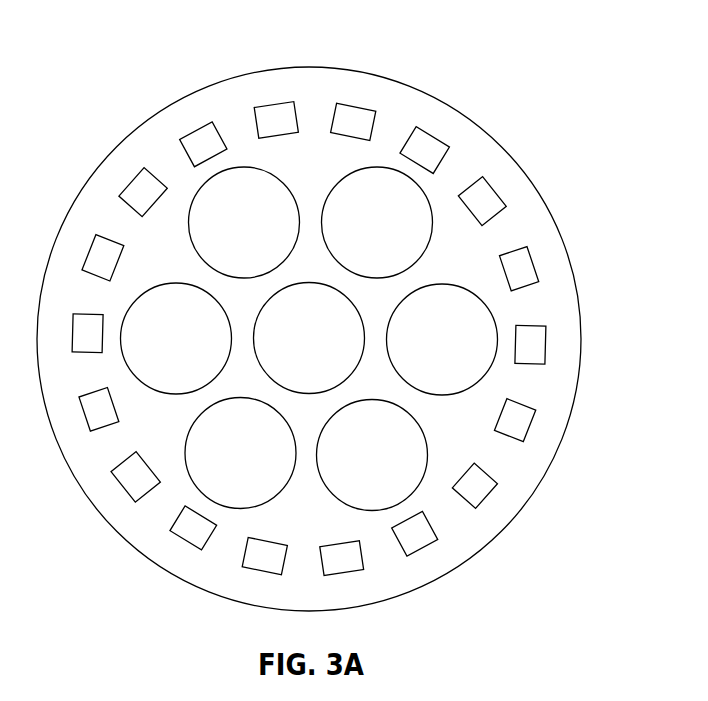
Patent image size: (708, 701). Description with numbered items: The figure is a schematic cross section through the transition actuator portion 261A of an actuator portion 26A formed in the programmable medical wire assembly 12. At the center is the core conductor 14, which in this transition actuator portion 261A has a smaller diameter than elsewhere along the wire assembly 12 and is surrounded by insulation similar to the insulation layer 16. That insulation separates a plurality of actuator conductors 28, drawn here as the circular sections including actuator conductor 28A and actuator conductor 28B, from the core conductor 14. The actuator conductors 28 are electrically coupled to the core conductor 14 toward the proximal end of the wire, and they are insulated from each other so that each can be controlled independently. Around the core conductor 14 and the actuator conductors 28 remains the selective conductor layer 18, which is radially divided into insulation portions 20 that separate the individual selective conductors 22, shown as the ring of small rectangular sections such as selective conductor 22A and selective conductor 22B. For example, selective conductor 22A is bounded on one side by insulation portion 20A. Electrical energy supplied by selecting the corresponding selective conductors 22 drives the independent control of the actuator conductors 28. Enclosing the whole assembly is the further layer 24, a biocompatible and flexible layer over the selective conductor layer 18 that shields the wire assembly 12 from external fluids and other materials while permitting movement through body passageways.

The wire assembly 12 is at (81, 190).
The core conductor 14 is at (293, 372).
The insulation layer 16 is at (403, 510).
The selective conductor layer 18 is at (522, 412).
The insulation portions 20 is at (533, 393).
The insulation portion 20A is at (566, 418).
The selective conductors 22 is at (530, 347).
The selective conductor 22A is at (536, 377).
The selective conductor 22B is at (201, 143).
The further layer 24 is at (562, 447).
The actuator portion 26A is at (478, 70).
The transition actuator portion 261A is at (522, 172).
The actuator conductors 28 is at (472, 348).
The actuator conductor 28A is at (439, 302).
The actuator conductor 28B is at (265, 230).